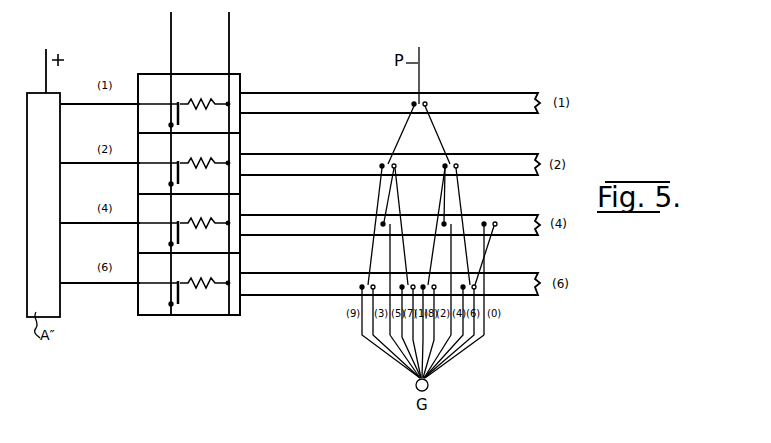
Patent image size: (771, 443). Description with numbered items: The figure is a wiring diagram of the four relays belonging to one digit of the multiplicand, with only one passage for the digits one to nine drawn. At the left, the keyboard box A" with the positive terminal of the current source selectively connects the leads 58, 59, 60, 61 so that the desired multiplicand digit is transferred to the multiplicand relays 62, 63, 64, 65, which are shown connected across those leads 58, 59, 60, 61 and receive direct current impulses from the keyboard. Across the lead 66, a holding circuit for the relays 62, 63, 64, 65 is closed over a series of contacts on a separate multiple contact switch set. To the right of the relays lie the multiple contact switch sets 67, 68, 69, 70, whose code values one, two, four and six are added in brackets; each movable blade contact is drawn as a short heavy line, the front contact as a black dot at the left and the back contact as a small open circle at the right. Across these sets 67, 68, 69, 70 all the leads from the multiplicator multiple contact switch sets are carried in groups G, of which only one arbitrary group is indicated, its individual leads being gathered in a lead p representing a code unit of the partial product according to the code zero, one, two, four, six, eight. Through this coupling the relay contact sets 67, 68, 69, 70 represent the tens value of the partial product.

The lead 58 is at (103, 106).
The lead 59 is at (103, 165).
The lead 60 is at (103, 225).
The lead 61 is at (103, 285).
The multiplicand relay 62 is at (147, 118).
The multiplicand relay 63 is at (147, 178).
The multiplicand relay 64 is at (147, 238).
The multiplicand relay 65 is at (147, 298).
The lead 66 is at (178, 163).
The multiple contact switch set 67 is at (510, 98).
The multiple contact switch set 68 is at (510, 160).
The multiple contact switch set 69 is at (504, 222).
The multiple contact switch set 70 is at (513, 283).